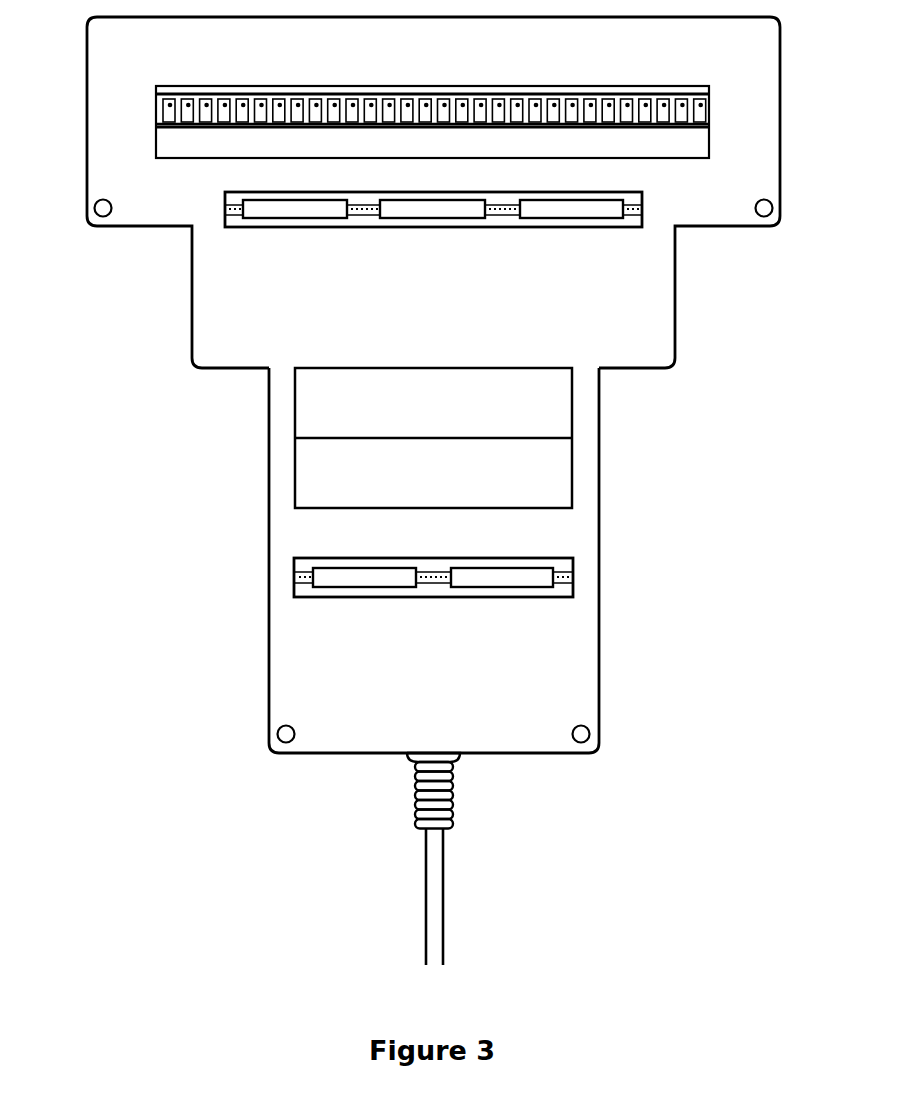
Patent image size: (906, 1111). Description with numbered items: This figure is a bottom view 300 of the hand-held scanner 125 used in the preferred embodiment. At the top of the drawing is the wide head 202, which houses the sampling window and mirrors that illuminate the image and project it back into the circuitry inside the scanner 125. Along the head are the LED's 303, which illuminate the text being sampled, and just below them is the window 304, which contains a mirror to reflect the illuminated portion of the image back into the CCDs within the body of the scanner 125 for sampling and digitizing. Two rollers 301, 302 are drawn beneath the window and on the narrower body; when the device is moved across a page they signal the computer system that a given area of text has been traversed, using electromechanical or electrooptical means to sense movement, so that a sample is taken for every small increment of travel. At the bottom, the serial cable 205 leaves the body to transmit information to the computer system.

The bottom view 300 is at (439, 491).
The head 202 is at (84, 123).
The LED's 303 is at (713, 108).
The window 304 is at (713, 139).
The roller 301 is at (386, 231).
The hand-held scanner 125 is at (267, 559).
The roller 302 is at (431, 600).
The serial cable 205 is at (424, 894).